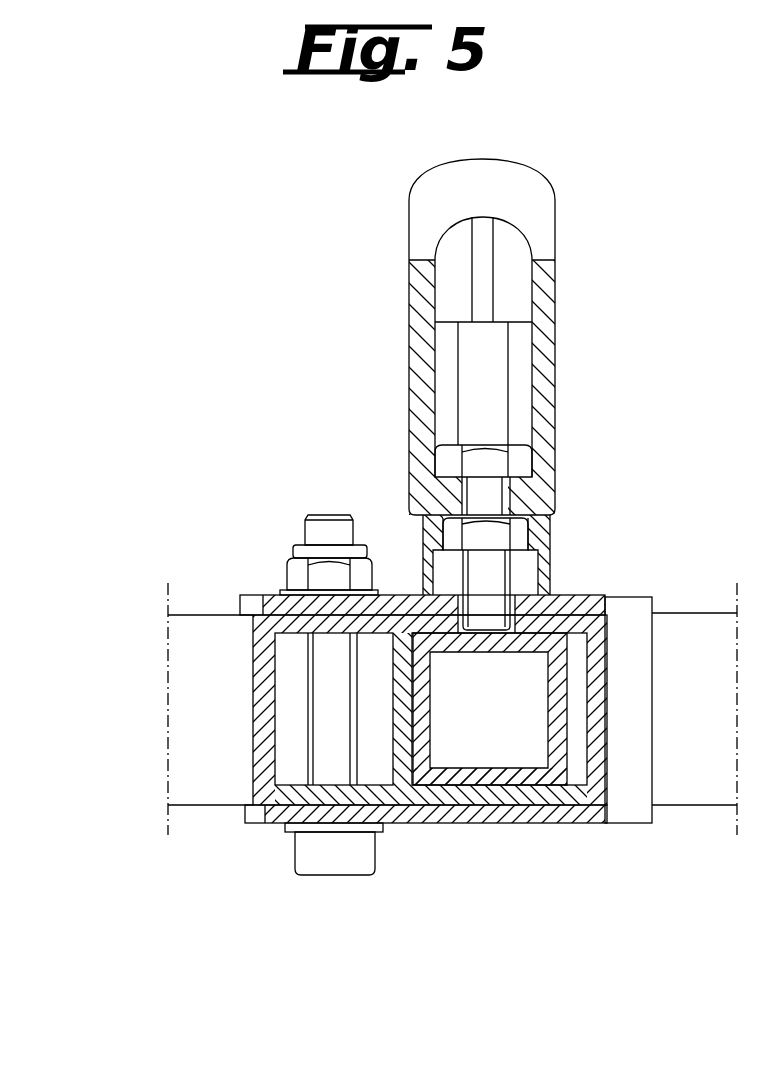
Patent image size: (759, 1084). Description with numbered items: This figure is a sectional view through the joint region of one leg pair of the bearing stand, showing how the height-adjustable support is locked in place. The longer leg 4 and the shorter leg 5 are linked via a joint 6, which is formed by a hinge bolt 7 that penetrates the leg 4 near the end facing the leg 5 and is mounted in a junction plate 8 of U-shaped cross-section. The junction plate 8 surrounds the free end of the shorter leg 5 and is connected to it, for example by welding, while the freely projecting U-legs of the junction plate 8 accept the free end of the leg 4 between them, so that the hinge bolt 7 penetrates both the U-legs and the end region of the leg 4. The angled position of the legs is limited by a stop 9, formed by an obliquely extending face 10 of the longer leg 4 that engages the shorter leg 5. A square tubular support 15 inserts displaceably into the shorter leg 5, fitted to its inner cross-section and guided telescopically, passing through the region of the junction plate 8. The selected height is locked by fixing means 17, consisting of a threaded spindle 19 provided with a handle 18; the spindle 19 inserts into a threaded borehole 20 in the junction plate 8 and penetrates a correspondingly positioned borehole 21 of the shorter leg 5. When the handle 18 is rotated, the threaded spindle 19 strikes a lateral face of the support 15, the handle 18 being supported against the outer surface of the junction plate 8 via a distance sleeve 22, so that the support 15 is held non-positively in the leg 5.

The leg 4 is at (356, 755).
The leg 5 is at (430, 795).
The joint 6 is at (332, 485).
The hinge bolt 7 is at (333, 750).
The junction plate 8 is at (480, 813).
The stop 9 is at (382, 712).
The face 10 is at (383, 625).
The support 15 is at (495, 777).
The fixing means 17 is at (535, 337).
The handle 18 is at (548, 295).
The threaded spindle 19 is at (490, 580).
The threaded borehole 20 is at (515, 612).
The borehole 21 is at (569, 718).
The distance sleeve 22 is at (538, 527).